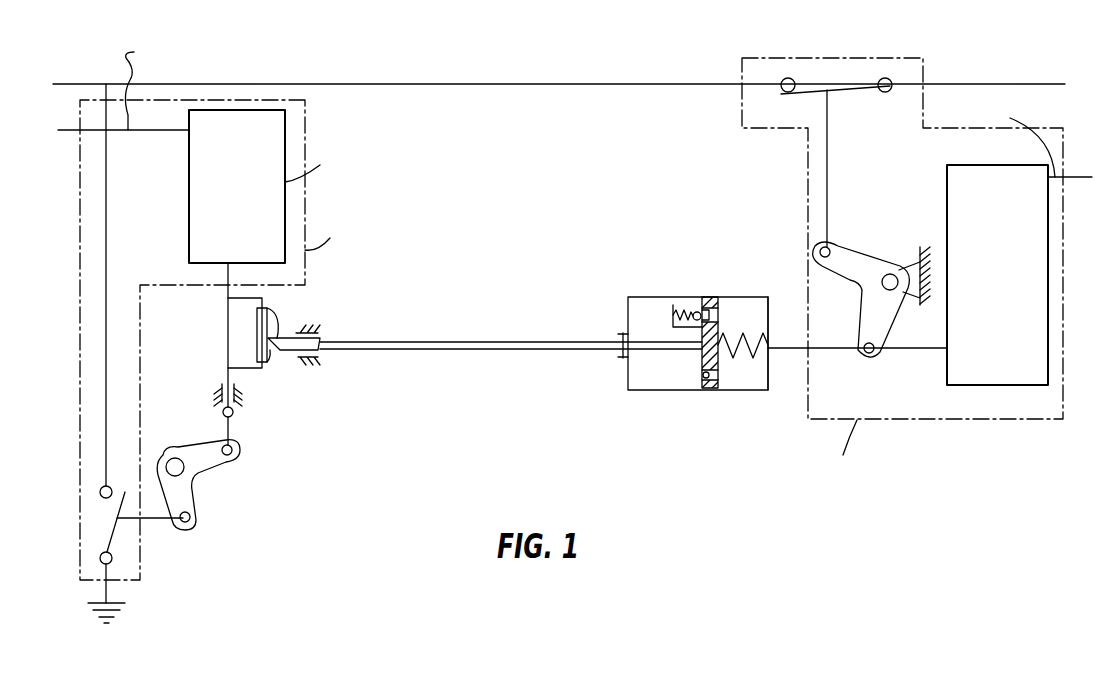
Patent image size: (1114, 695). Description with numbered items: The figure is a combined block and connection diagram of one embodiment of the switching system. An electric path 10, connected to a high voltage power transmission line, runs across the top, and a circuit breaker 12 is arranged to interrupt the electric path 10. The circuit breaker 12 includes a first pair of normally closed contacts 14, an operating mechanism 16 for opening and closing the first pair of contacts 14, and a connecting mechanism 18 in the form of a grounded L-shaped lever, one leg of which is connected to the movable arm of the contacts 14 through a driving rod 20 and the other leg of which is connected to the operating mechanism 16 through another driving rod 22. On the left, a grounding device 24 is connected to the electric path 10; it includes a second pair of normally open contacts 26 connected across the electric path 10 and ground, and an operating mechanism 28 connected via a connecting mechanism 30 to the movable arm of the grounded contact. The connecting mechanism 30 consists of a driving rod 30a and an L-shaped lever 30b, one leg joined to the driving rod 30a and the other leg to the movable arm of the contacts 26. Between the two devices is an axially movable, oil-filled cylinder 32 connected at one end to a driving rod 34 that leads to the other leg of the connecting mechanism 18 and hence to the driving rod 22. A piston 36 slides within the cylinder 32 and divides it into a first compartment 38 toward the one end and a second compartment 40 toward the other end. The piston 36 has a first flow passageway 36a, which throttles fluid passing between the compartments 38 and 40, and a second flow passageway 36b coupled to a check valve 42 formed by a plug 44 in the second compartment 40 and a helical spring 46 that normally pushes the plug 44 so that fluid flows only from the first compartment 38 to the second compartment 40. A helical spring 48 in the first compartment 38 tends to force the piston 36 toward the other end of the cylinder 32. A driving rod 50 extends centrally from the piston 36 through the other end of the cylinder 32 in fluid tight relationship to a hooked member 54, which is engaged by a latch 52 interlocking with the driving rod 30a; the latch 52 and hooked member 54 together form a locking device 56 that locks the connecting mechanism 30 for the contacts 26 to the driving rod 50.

The electric path 10 is at (497, 84).
The circuit breaker 12 is at (902, 58).
The first pair of normally closed contacts 14 is at (850, 92).
The operating mechanism 16 is at (947, 185).
The connecting mechanism 18 is at (877, 315).
The driving rod 20 is at (828, 159).
The driving rod 22 is at (920, 349).
The grounding device 24 is at (343, 139).
The second pair of normally open contacts 26 is at (118, 523).
The operating mechanism 28 is at (189, 183).
The connecting mechanism 30 is at (152, 370).
The driving rod 30a is at (226, 312).
The L-shaped lever 30b is at (191, 450).
The axially movable cylinder 32 is at (627, 380).
The driving rod 34 is at (790, 350).
The piston 36 is at (700, 357).
The first flow passageway 36a is at (704, 378).
The second flow passageway 36b is at (719, 317).
The first compartment 38 is at (753, 388).
The second compartment 40 is at (637, 388).
The check valve 42 is at (712, 236).
The plug 44 is at (697, 310).
The helical spring 46 is at (680, 310).
The helical spring 48 is at (733, 360).
The driving rod 50 is at (489, 350).
The latch 52 is at (322, 349).
The hooked member 54 is at (270, 363).
The locking device 56 is at (345, 449).